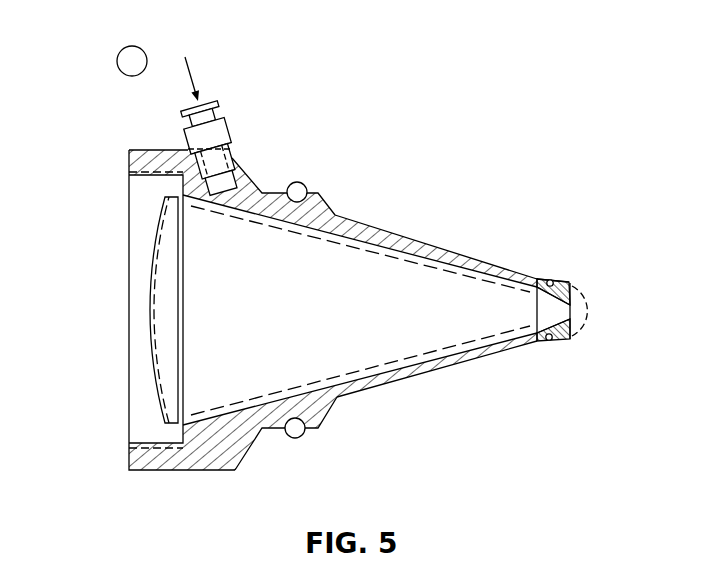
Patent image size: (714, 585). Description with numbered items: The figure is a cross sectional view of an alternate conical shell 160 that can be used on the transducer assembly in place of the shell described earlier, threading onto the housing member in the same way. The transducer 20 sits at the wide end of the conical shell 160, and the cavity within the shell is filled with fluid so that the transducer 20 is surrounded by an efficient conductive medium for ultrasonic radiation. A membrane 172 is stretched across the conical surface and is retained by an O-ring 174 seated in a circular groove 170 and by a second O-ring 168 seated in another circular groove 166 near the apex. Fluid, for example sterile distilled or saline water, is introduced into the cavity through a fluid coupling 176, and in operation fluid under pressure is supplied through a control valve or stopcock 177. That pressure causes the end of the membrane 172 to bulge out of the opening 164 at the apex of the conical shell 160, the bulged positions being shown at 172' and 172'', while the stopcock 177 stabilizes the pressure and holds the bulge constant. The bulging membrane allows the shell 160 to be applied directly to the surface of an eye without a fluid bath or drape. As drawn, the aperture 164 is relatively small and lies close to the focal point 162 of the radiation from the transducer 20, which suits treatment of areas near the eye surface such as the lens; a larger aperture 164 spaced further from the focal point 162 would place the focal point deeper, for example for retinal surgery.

The transducer 20 is at (150, 334).
The conical shell 160 is at (490, 474).
The focal point 162 is at (569, 312).
The opening 164 is at (569, 318).
The circular groove 166 is at (550, 341).
The O-ring 168 is at (546, 338).
The circular groove 170 is at (298, 430).
The membrane 172 is at (360, 319).
The bulged membrane end 172' is at (582, 257).
The bulged membrane end 172'' is at (623, 294).
The O-ring 174 is at (304, 184).
The fluid coupling 176 is at (226, 134).
The stopcock 177 is at (117, 58).